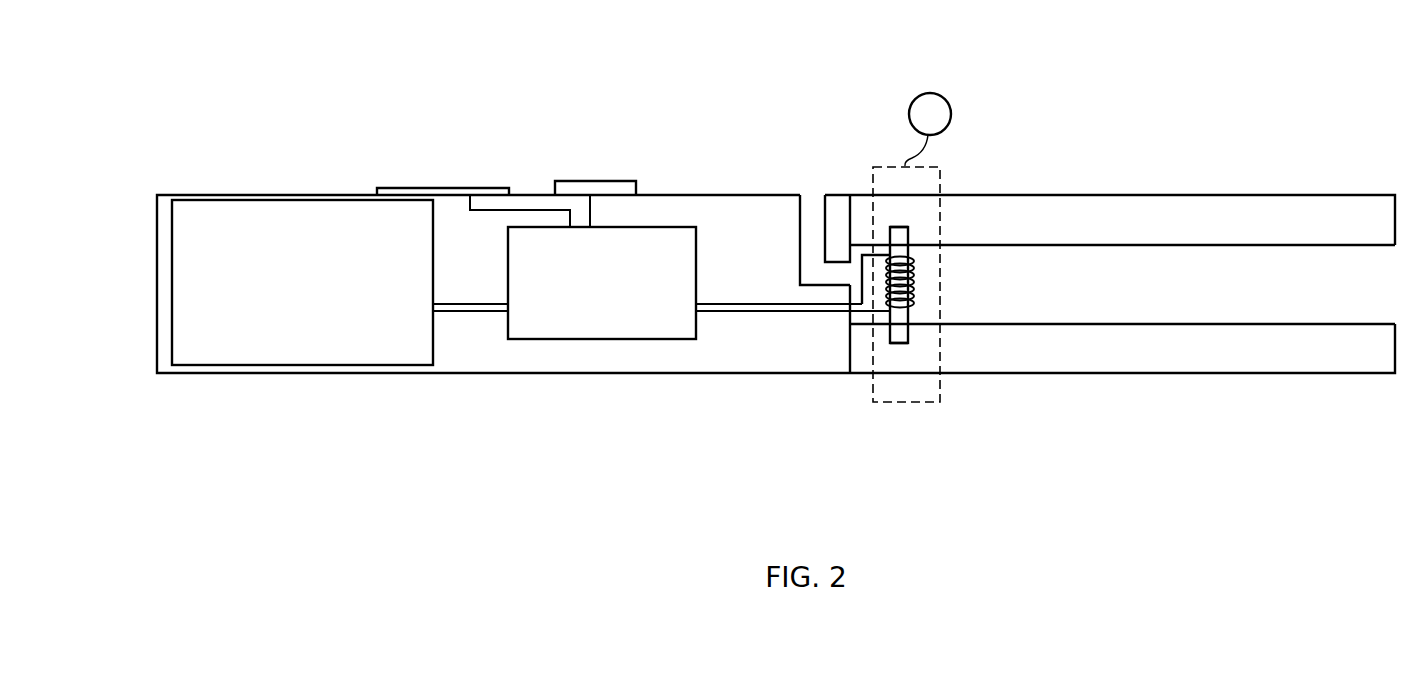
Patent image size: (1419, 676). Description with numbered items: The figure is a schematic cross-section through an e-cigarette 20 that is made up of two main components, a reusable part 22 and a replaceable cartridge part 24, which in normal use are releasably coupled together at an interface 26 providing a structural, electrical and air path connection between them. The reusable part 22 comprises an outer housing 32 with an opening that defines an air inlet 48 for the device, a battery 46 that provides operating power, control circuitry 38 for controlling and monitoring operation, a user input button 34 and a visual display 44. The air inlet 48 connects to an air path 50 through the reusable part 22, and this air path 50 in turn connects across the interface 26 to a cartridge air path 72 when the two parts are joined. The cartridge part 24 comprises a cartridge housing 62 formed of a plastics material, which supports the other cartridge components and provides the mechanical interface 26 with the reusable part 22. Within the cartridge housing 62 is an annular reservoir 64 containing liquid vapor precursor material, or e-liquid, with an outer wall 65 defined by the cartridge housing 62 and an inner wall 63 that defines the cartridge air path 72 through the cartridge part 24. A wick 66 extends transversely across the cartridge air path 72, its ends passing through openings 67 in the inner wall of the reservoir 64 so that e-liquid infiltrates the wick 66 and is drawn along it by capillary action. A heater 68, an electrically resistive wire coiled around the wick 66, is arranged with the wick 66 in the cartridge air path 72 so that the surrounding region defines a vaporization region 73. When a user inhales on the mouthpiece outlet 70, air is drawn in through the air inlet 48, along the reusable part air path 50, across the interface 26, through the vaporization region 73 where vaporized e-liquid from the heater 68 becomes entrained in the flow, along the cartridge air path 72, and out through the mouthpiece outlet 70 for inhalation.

The e-cigarette 20 is at (1192, 102).
The reusable part 22 is at (836, 455).
The cartridge part 24 is at (1392, 455).
The interface 26 is at (851, 374).
The outer housing 32 is at (172, 194).
The user input button 34 is at (575, 181).
The control circuitry 38 is at (661, 283).
The visual display 44 is at (396, 188).
The battery 46 is at (302, 282).
The air inlet 48 is at (812, 197).
The air path 50 is at (817, 271).
The cartridge housing 62 is at (1005, 193).
The inner wall 63 is at (1198, 244).
The reservoir 64 is at (1356, 284).
The outer wall 65 is at (1105, 196).
The wick 66 is at (906, 256).
The openings 67 is at (906, 243).
The heater 68 is at (912, 287).
The mouthpiece outlet 70 is at (1390, 278).
The cartridge air path 72 is at (1150, 283).
The vaporization region 73 is at (920, 312).